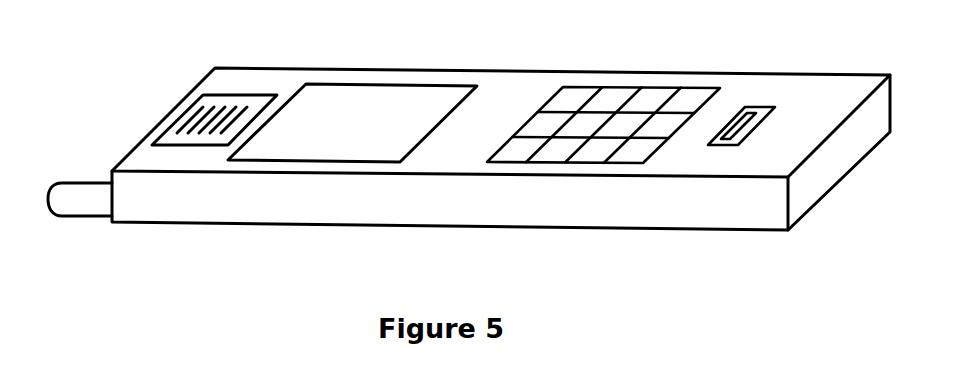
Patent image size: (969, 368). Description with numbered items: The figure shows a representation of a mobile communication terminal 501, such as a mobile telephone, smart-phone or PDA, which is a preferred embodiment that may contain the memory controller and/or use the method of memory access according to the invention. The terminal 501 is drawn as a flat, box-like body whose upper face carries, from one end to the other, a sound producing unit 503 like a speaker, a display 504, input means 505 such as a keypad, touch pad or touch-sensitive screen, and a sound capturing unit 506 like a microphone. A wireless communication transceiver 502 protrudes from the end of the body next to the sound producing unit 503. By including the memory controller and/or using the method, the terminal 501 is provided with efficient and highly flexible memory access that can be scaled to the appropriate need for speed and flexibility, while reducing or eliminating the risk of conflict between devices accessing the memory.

The mobile communication terminal 501 is at (390, 229).
The wireless communication transceiver 502 is at (90, 218).
The sound producing unit 503 is at (187, 110).
The display 504 is at (372, 97).
The input means 505 is at (593, 98).
The sound capturing unit 506 is at (762, 107).